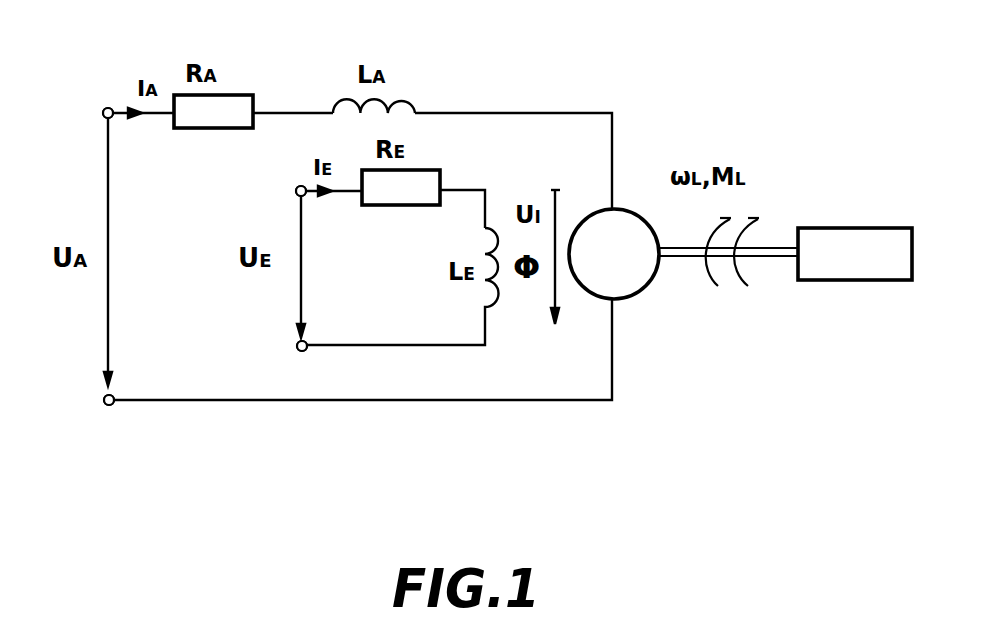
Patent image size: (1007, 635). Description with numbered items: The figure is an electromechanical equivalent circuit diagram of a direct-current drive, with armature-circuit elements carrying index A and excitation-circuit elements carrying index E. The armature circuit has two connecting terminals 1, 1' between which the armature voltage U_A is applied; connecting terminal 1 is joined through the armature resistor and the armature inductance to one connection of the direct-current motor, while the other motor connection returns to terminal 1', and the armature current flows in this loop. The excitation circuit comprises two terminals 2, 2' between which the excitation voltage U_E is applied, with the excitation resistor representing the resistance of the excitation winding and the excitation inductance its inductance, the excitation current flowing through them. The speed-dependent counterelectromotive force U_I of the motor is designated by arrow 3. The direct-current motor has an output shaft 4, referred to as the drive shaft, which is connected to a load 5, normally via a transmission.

The connecting terminal 1 is at (75, 80).
The connecting terminal 1' is at (83, 433).
The terminal 2 is at (271, 180).
The terminal 2' is at (272, 355).
The arrow 3 is at (557, 197).
The output shaft 4 is at (772, 248).
The load 5 is at (862, 281).